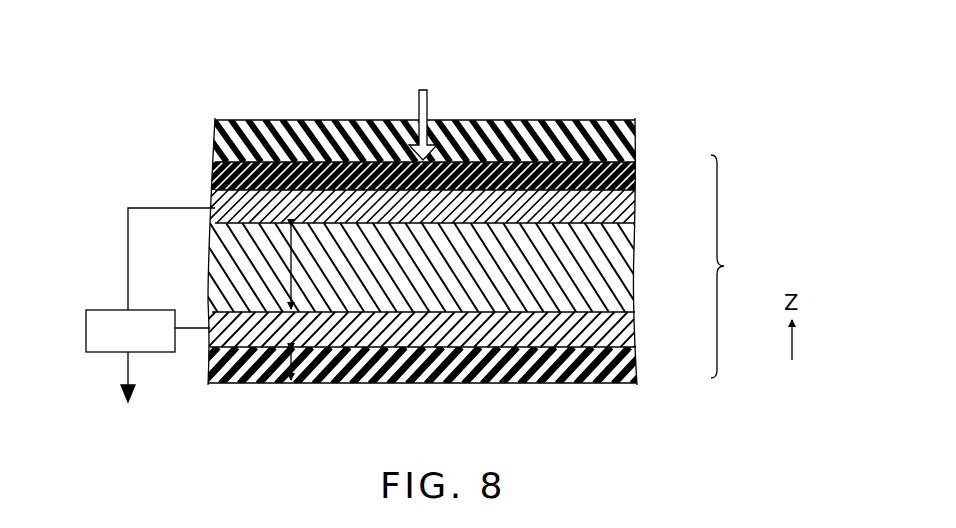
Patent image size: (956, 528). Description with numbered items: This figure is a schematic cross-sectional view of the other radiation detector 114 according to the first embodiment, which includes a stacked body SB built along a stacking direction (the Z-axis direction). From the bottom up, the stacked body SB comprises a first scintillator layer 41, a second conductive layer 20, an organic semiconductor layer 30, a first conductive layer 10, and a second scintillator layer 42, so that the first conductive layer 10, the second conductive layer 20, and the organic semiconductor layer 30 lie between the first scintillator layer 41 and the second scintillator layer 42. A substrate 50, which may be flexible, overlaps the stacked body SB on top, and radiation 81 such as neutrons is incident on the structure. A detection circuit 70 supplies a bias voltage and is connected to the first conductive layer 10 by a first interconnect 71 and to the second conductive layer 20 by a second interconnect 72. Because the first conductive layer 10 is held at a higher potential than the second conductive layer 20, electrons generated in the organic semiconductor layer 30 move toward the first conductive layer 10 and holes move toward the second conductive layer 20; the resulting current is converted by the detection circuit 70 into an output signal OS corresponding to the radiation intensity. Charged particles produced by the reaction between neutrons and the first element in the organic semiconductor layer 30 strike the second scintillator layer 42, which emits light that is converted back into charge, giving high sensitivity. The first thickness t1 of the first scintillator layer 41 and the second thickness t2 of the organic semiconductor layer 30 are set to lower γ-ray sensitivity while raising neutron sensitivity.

The first conductive layer 10 is at (613, 208).
The second conductive layer 20 is at (613, 330).
The organic semiconductor layer 30 is at (613, 270).
The first scintillator layer 41 is at (613, 366).
The second scintillator layer 42 is at (613, 175).
The substrate 50 is at (613, 138).
The detection circuit 70 is at (108, 308).
The first interconnect 71 is at (127, 227).
The second interconnect 72 is at (194, 333).
The radiation 81 is at (428, 104).
The radiation detector 114 is at (733, 150).
The stacked body SB is at (736, 266).
The output signal OS is at (125, 372).
The first thickness t1 is at (286, 363).
The second thickness t2 is at (283, 266).